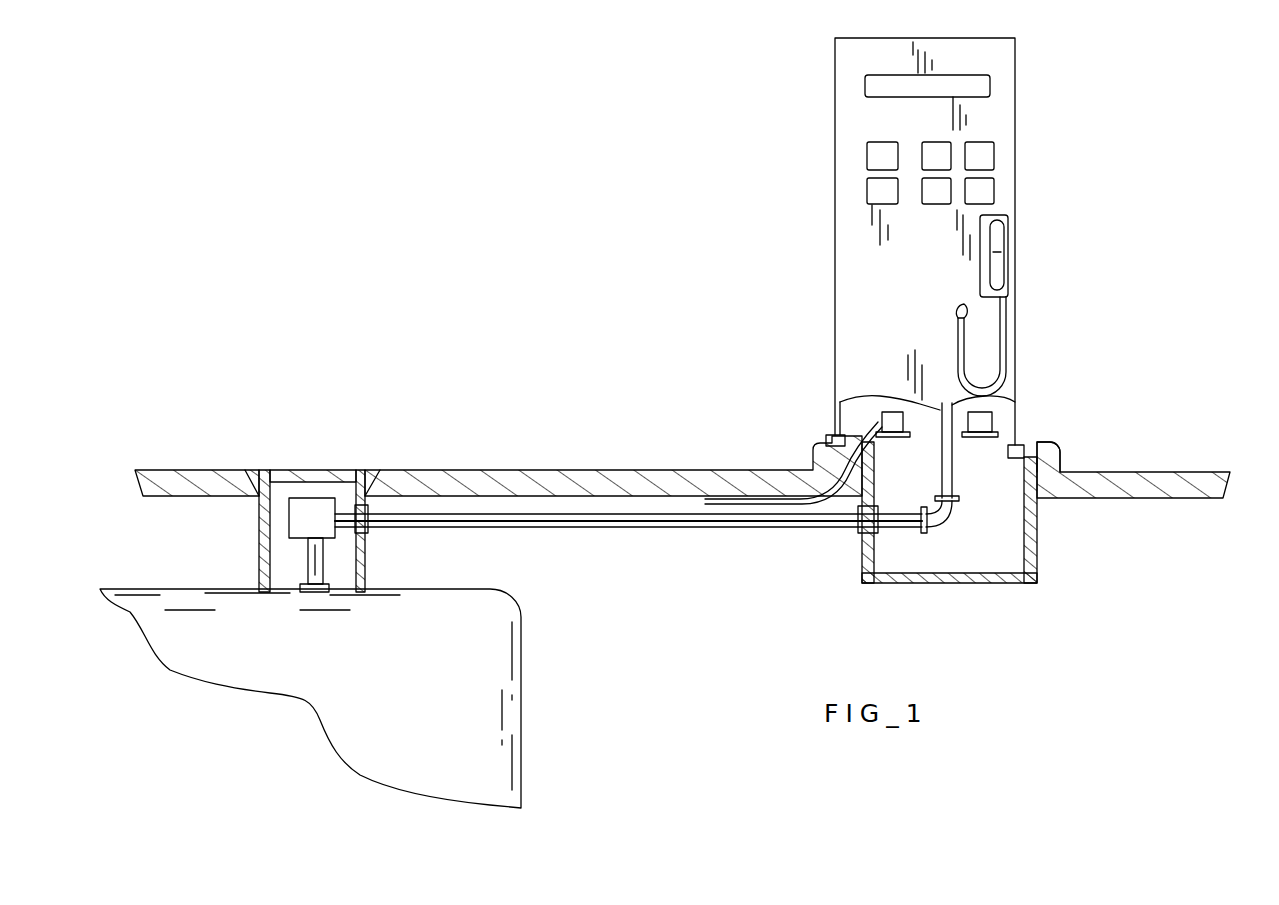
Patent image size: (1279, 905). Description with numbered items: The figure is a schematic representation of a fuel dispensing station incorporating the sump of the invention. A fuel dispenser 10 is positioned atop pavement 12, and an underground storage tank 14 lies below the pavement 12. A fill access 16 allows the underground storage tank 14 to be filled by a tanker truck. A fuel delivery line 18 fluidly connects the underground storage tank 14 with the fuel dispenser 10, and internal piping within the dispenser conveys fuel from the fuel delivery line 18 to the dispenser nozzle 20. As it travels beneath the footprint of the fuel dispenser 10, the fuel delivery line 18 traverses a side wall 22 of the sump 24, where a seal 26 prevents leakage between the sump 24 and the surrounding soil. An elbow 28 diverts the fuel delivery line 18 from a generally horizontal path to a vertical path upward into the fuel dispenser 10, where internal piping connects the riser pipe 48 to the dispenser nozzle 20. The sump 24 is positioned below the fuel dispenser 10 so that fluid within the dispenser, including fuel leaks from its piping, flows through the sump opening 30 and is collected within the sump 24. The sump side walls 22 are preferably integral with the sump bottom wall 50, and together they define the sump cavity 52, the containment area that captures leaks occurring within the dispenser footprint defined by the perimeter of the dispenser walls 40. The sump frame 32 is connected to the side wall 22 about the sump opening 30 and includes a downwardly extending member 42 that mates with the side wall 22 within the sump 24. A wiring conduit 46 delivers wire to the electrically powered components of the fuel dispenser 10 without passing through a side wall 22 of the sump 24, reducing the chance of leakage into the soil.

The fuel dispenser 10 is at (1052, 162).
The pavement 12 is at (1197, 478).
The underground storage tank 14 is at (500, 680).
The fill access 16 is at (293, 455).
The fuel delivery line 18 is at (632, 525).
The dispenser nozzle 20 is at (1000, 268).
The sump side wall 22 is at (957, 541).
The sump 24 is at (1048, 545).
The seal 26 is at (860, 535).
The elbow 28 is at (955, 515).
The sump opening 30 is at (986, 458).
The sump frame 32 is at (1050, 448).
The dispenser wall 40 is at (886, 274).
The downwardly extending member 42 is at (1025, 468).
The wiring conduit 46 is at (722, 498).
The riser pipe 48 is at (940, 458).
The sump bottom wall 50 is at (970, 583).
The sump cavity 52 is at (920, 555).